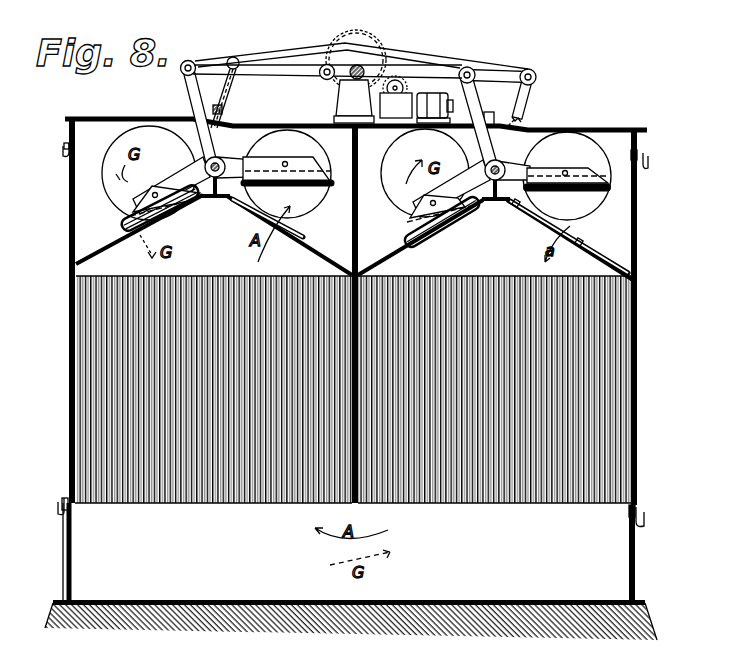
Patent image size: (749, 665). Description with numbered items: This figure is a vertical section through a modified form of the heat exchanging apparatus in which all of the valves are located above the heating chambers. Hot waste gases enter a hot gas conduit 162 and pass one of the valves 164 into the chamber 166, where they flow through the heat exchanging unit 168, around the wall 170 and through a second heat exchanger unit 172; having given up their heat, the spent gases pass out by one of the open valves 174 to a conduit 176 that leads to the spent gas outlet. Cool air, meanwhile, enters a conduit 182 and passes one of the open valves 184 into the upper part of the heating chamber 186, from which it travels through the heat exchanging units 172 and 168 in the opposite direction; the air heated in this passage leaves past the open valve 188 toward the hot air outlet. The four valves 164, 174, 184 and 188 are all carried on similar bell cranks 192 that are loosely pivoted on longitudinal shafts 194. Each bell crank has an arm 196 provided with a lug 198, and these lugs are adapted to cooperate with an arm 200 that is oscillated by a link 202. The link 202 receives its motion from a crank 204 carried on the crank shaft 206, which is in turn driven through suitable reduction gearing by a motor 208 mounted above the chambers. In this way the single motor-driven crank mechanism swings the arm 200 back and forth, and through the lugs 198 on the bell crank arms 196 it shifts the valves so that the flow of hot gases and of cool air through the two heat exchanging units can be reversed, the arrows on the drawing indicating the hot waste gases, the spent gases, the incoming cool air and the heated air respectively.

The hot gas conduit 162 is at (75, 214).
The valve 164 is at (170, 196).
The chamber 166 is at (214, 380).
The heat exchanging unit 168 is at (188, 497).
The wall 170 is at (352, 490).
The heat exchanger unit 172 is at (499, 509).
The valve 174 is at (425, 227).
The conduit 176 is at (420, 237).
The conduit 182 is at (636, 243).
The valve 184 is at (578, 190).
The heating chamber 186 is at (495, 379).
The valve 188 is at (310, 186).
The bell crank 192 is at (540, 164).
The longitudinal shaft 194 is at (246, 162).
The arm 196 is at (217, 130).
The lug 198 is at (224, 110).
The arm 200 is at (187, 92).
The link 202 is at (218, 68).
The crank 204 is at (342, 52).
The crank shaft 206 is at (360, 70).
The motor 208 is at (436, 92).